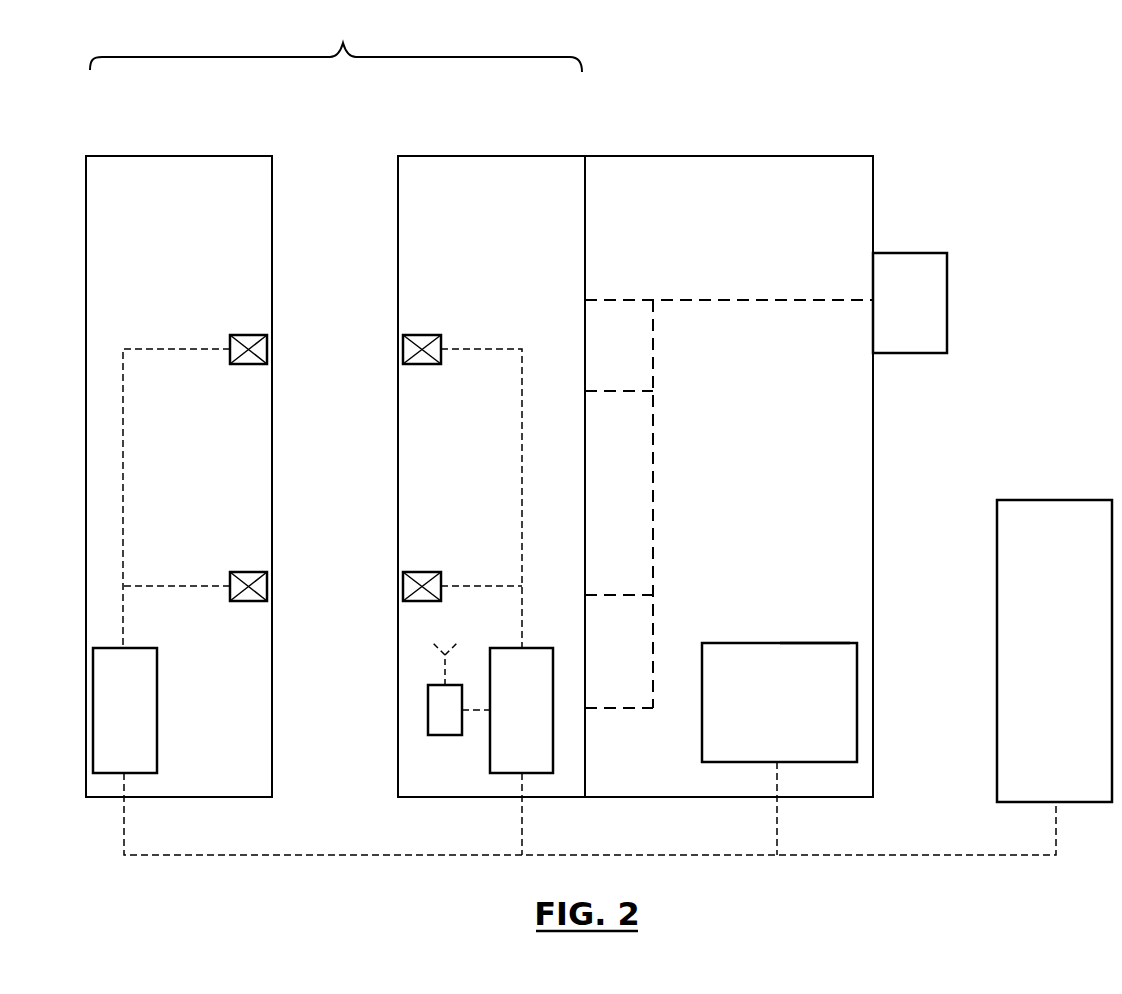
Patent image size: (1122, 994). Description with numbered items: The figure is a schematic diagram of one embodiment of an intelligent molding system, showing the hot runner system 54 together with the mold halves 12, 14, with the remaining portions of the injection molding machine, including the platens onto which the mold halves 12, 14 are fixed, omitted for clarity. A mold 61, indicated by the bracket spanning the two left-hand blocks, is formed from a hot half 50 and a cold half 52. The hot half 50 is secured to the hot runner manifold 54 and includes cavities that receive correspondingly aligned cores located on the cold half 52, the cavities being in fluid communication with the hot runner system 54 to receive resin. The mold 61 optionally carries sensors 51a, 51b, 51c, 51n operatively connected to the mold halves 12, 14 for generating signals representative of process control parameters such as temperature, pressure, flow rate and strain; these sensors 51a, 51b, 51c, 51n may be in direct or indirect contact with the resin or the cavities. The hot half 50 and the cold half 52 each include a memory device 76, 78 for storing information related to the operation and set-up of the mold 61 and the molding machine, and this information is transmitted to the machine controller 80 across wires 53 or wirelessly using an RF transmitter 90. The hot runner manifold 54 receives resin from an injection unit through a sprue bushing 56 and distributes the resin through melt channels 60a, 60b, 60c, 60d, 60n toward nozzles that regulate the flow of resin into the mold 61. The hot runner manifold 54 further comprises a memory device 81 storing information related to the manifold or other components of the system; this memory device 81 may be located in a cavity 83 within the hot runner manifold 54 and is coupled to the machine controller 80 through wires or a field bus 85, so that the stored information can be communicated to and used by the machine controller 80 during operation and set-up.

The mold half 12 is at (517, 156).
The mold half 14 is at (214, 156).
The hot half 50 is at (438, 156).
The sensor 51a is at (422, 335).
The sensor 51b is at (422, 572).
The sensor 51c is at (247, 335).
The sensor 51n is at (247, 572).
The cold half 52 is at (136, 156).
The wires 53 is at (635, 852).
The hot runner manifold 54 is at (749, 156).
The sprue bushing 56 is at (896, 317).
The melt channel 60a is at (766, 298).
The melt channel 60b is at (610, 298).
The melt channel 60c is at (625, 392).
The melt channel 60d is at (625, 597).
The melt channel 60n is at (625, 710).
The mold 61 is at (336, 43).
The memory device 76 is at (109, 724).
The memory device 78 is at (506, 717).
The machine controller 80 is at (1042, 659).
The memory device 81 is at (761, 717).
The cavity 83 is at (815, 643).
The wires or field bus 85 is at (778, 832).
The RF transmitter 90 is at (428, 706).